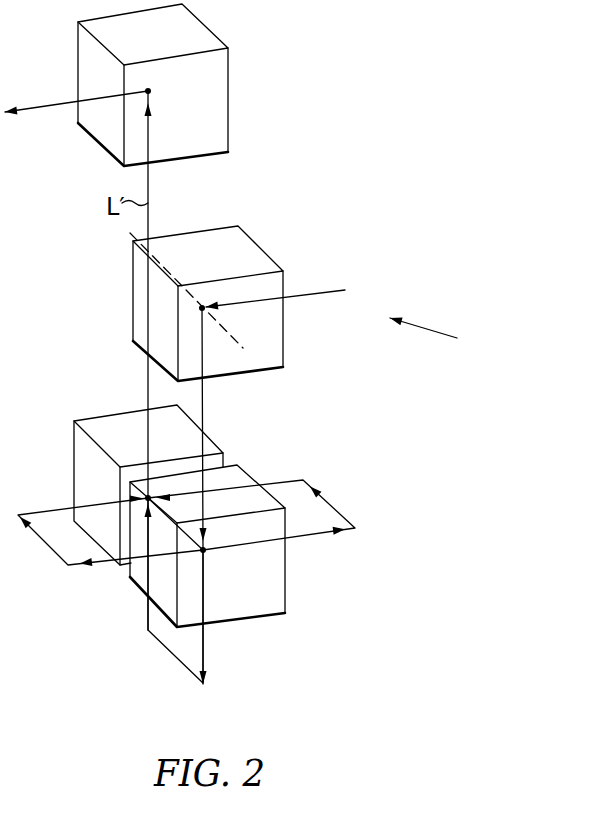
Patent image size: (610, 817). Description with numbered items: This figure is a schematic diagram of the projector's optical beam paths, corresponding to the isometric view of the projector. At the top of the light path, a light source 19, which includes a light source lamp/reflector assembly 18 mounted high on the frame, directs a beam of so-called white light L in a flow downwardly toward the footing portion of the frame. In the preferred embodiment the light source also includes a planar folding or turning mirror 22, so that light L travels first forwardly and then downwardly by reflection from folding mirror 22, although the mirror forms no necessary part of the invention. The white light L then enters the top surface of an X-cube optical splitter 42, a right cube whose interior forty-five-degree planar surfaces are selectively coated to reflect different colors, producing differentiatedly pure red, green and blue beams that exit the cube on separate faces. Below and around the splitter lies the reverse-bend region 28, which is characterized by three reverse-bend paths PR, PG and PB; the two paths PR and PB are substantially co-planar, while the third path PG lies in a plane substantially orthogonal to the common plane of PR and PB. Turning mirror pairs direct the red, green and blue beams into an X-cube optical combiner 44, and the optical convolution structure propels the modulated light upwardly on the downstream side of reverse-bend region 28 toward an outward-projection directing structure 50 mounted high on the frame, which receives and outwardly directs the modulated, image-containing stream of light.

The light source lamp/reflector assembly 18 is at (319, 292).
The light source 19 is at (444, 338).
The folding or turning mirror 22 is at (277, 345).
The reverse-bend region 28 is at (195, 642).
The X-cube optical splitter 42 is at (278, 587).
The X-cube optical combiner 44 is at (108, 423).
The outward-projection directing structure 50 is at (80, 53).
The white light beam L is at (205, 405).
The red reverse-bend path PR is at (50, 550).
The blue reverse-bend path PB is at (333, 505).
The green reverse-bend path PG is at (170, 651).